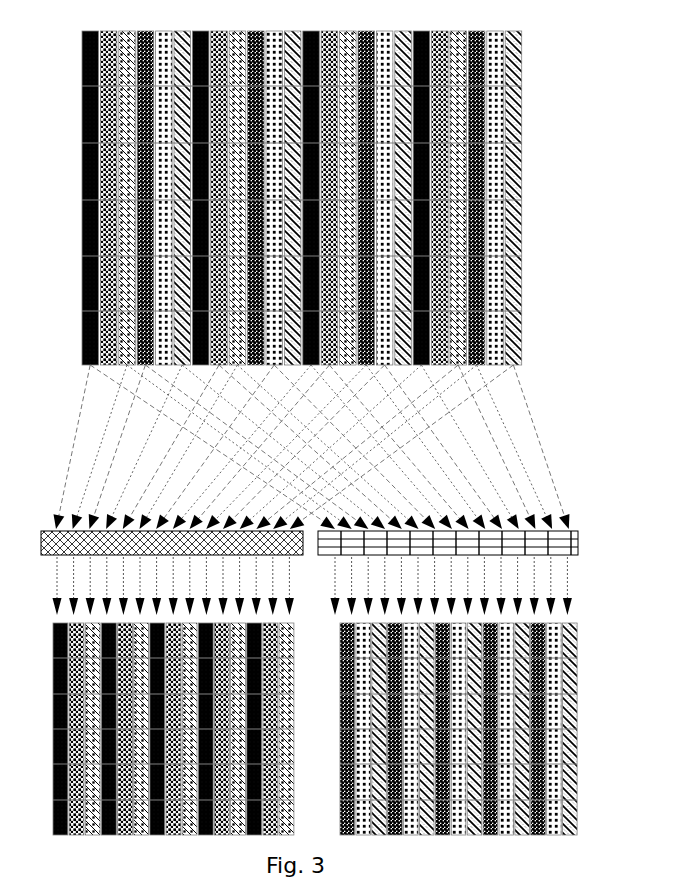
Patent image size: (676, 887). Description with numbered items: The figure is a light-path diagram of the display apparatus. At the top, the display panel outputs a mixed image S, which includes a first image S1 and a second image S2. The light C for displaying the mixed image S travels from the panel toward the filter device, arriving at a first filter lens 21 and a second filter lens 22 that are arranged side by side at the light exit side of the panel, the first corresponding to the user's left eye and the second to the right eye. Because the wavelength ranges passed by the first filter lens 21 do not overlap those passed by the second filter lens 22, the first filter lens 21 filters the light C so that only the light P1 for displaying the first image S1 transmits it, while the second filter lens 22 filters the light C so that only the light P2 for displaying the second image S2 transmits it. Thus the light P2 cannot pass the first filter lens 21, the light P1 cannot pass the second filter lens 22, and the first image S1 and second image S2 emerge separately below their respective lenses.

The mixed image S is at (516, 172).
The light for displaying the mixed image C is at (570, 360).
The first filter lens 21 is at (172, 543).
The second filter lens 22 is at (448, 543).
The light for displaying the first image P1 is at (163, 586).
The light for displaying the second image P2 is at (463, 586).
The first image S1 is at (46, 692).
The second image S2 is at (565, 700).